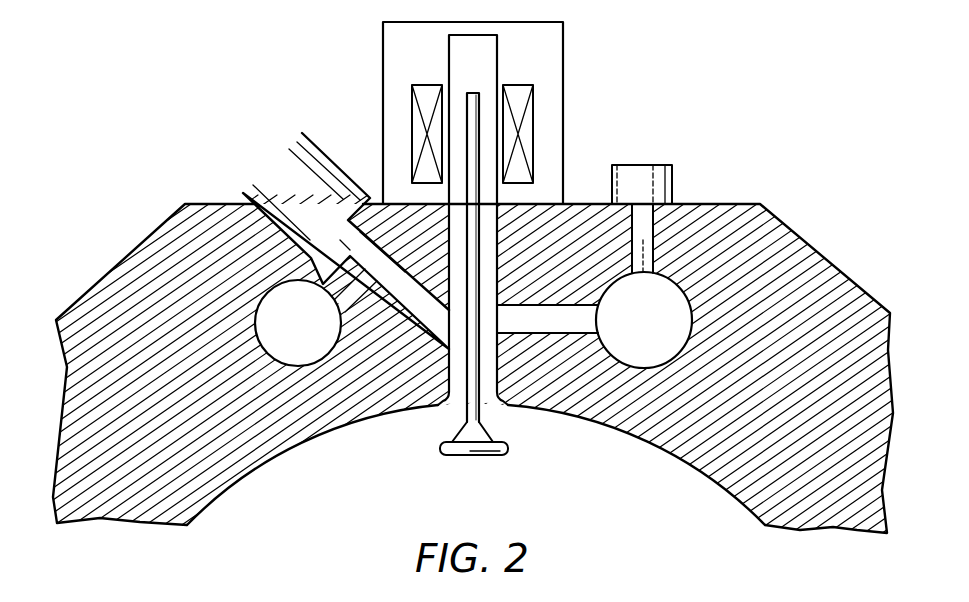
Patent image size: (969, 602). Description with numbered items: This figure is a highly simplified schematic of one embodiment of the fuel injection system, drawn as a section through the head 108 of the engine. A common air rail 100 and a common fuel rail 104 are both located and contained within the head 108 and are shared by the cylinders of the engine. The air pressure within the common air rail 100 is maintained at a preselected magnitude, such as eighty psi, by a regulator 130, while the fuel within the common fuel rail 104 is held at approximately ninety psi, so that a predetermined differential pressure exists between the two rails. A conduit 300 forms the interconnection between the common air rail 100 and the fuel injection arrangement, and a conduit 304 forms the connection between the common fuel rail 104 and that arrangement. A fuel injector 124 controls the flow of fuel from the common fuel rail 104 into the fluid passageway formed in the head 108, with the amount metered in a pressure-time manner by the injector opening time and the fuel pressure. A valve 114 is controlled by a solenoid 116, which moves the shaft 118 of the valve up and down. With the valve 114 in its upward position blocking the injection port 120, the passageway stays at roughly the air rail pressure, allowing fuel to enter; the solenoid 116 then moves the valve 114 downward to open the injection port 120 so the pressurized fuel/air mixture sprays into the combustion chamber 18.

The combustion chamber 18 is at (625, 472).
The common air rail 100 is at (661, 335).
The common fuel rail 104 is at (316, 337).
The head 108 is at (805, 240).
The valve 114 is at (482, 430).
The solenoid 116 is at (527, 133).
The shaft 118 is at (474, 254).
The injection port 120 is at (457, 398).
The fuel injector 124 is at (282, 170).
The regulator 130 is at (675, 183).
The conduit 300 is at (533, 322).
The conduit 304 is at (340, 282).